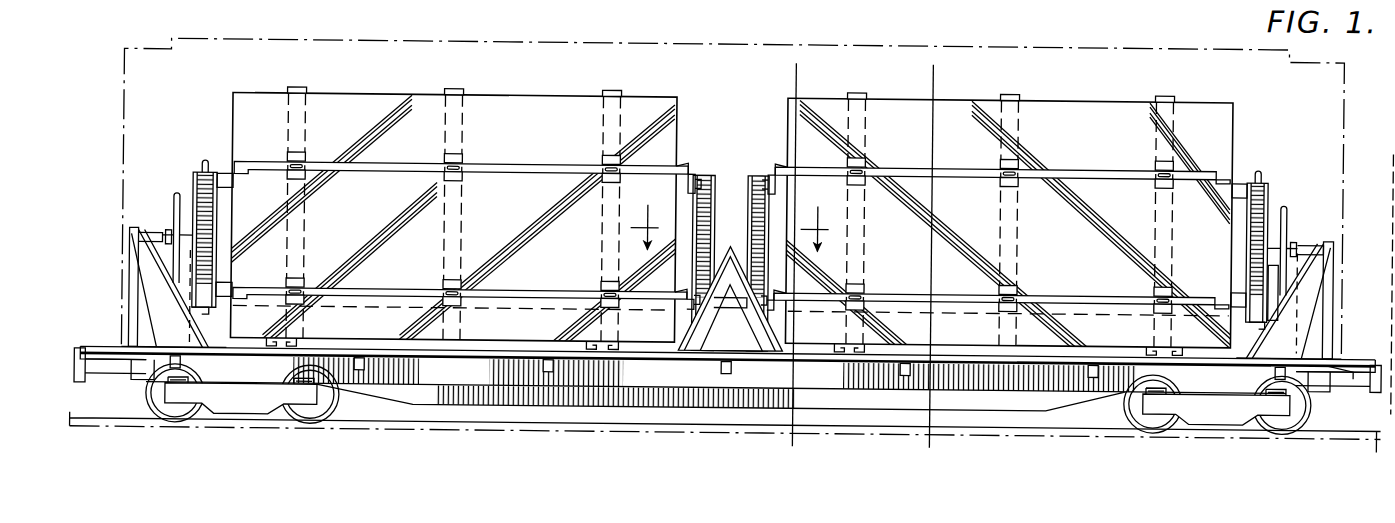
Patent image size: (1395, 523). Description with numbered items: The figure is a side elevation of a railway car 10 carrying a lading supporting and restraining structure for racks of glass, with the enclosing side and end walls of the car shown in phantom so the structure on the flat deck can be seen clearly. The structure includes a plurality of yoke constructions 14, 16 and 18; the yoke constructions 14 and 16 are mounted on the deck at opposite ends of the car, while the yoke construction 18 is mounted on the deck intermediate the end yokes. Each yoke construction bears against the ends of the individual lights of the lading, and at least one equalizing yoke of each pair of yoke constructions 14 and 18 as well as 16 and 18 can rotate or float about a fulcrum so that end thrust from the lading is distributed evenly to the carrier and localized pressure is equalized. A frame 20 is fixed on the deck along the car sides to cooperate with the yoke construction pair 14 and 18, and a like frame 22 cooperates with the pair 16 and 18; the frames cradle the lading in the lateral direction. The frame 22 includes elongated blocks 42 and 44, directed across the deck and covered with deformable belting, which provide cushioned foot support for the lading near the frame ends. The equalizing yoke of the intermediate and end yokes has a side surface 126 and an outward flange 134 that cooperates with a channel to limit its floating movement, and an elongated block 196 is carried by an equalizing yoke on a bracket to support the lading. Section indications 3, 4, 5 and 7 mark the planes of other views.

The railway car 10 is at (417, 386).
The yoke construction 14 is at (114, 250).
The yoke construction 16 is at (1351, 280).
The yoke construction 18 is at (734, 162).
The frame 20 is at (494, 147).
The frame 22 is at (1042, 126).
The block 42 is at (1167, 338).
The block 44 is at (854, 338).
The side surface 126 is at (1267, 185).
The outward flange 134 is at (1265, 214).
The elongated block 196 is at (667, 305).
The section line 3- 3 is at (1394, 158).
The section line 4- 4 is at (952, 73).
The section line 5- 5 is at (817, 74).
The section line 7- 7 is at (730, 237).